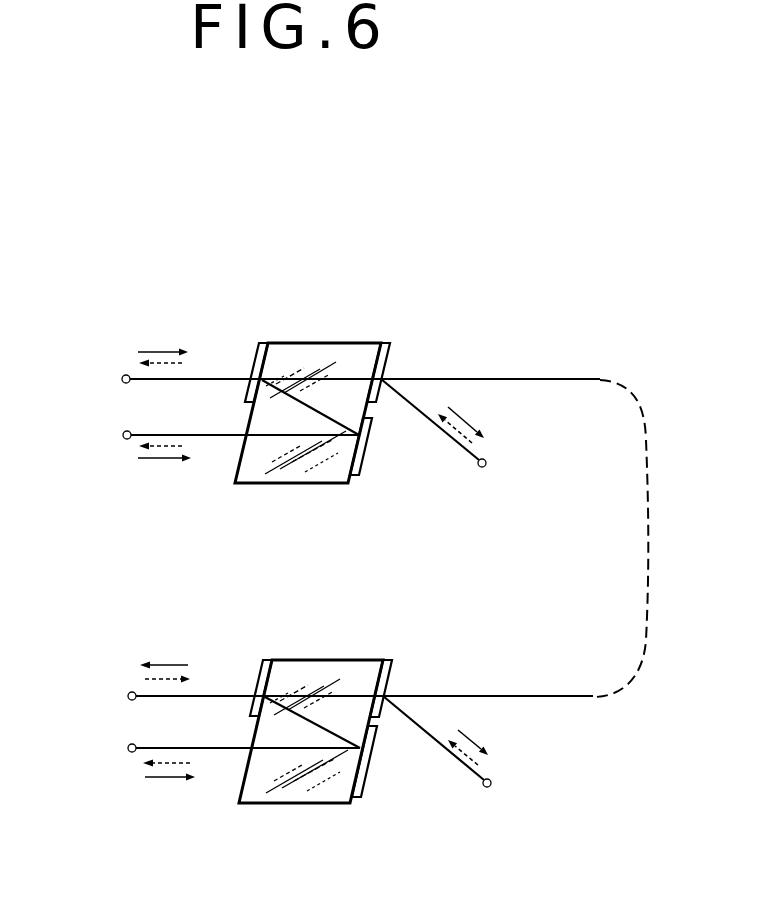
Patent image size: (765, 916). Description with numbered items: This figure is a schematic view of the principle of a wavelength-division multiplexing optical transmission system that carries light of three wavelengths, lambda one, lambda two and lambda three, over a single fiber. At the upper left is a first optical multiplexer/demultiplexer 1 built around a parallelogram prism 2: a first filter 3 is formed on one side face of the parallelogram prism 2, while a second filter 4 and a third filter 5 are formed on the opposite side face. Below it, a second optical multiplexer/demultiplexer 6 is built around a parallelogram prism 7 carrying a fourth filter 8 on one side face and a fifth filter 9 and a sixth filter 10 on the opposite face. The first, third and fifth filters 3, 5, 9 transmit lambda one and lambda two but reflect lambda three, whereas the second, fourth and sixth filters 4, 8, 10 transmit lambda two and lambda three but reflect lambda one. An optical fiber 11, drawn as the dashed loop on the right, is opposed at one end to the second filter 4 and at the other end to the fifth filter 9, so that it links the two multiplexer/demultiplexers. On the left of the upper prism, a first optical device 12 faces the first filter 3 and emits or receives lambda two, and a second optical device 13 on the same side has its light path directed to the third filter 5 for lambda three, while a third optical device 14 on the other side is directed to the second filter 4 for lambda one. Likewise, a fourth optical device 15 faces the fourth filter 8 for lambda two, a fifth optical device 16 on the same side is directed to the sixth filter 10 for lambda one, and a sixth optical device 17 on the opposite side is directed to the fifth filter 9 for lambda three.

The first optical multiplexer/demultiplexer 1 is at (287, 328).
The parallelogram prism 2 is at (315, 348).
The first filter 3 is at (255, 347).
The second filter 4 is at (387, 352).
The third filter 5 is at (360, 472).
The second optical multiplexer/demultiplexer 6 is at (308, 647).
The parallelogram prism 7 is at (278, 800).
The fourth filter 8 is at (268, 668).
The fifth filter 9 is at (387, 668).
The sixth filter 10 is at (360, 793).
The optical fiber 11 is at (571, 379).
The first optical device 12 is at (122, 378).
The second optical device 13 is at (123, 436).
The third optical device 14 is at (487, 465).
The fourth optical device 15 is at (128, 694).
The fifth optical device 16 is at (128, 751).
The sixth optical device 17 is at (491, 785).